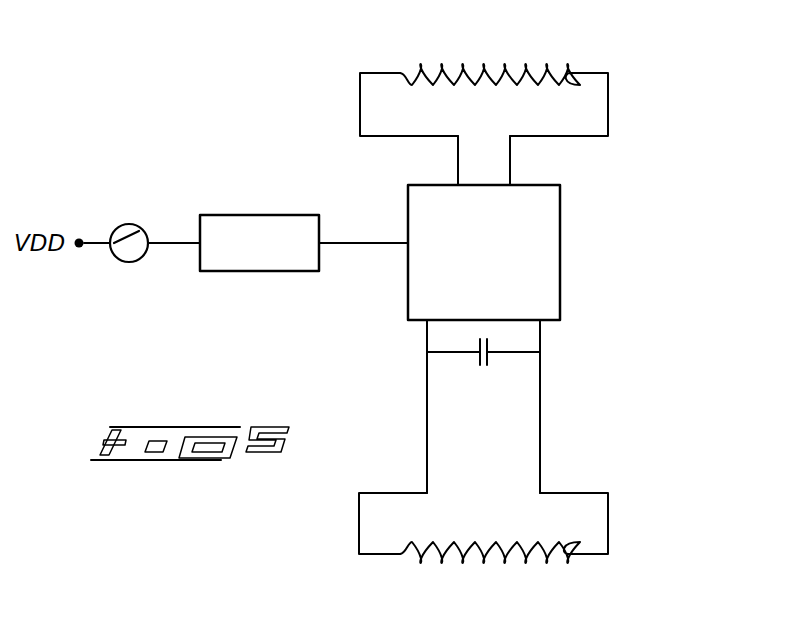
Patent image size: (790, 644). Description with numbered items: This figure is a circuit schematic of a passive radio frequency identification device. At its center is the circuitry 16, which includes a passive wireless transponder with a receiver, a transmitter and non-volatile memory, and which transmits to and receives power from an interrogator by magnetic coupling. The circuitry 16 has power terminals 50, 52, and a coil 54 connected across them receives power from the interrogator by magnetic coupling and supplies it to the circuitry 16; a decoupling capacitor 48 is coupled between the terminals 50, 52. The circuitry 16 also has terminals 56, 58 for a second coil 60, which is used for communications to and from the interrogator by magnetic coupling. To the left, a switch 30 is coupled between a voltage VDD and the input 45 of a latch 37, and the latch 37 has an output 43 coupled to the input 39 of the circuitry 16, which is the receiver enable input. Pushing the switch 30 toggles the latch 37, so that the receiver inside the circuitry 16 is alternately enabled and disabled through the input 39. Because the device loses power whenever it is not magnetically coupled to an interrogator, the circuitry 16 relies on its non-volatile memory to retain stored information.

The circuitry 16 is at (408, 292).
The switch 30 is at (128, 224).
The latch 37 is at (243, 215).
The input 39 is at (408, 232).
The output 43 is at (324, 246).
The input 45 is at (199, 242).
The decoupling capacitor 48 is at (490, 362).
The power terminal 50 is at (427, 322).
The power terminal 52 is at (541, 322).
The coil 54 is at (610, 522).
The terminal 56 is at (457, 185).
The terminal 58 is at (511, 185).
The coil 60 is at (476, 65).